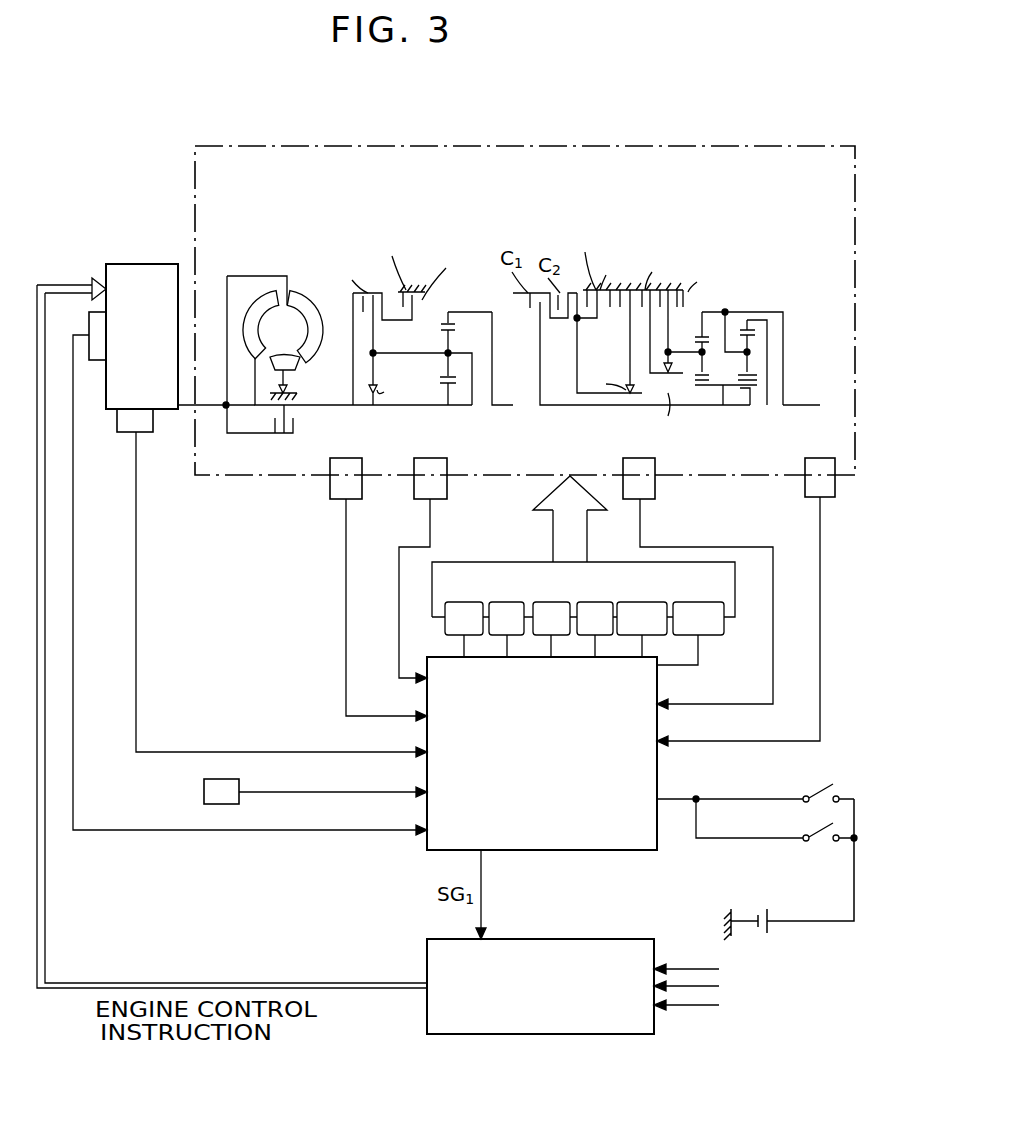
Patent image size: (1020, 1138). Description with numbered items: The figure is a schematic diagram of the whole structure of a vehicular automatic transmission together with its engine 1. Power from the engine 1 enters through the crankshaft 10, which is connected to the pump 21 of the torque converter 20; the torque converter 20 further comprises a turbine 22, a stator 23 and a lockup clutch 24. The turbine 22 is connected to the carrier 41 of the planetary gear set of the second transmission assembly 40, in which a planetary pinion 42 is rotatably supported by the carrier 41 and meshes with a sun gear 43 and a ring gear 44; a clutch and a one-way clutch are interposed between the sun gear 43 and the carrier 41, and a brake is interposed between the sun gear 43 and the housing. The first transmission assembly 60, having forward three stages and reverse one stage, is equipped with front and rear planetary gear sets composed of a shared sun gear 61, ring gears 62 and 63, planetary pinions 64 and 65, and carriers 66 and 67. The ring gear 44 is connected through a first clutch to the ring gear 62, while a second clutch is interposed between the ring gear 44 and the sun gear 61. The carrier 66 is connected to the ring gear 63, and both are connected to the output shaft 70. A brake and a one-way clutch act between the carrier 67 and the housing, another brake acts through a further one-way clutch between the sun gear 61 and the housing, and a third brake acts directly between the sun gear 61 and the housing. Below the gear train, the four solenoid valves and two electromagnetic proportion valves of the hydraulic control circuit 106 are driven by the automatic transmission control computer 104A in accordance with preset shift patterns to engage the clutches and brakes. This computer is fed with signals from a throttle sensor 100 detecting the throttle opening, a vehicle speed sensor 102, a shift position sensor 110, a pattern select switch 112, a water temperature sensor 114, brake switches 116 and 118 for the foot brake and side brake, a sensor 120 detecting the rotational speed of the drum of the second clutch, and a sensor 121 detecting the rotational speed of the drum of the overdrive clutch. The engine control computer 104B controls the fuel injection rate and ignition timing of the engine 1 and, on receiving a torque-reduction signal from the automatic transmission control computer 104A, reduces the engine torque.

The engine 1 is at (143, 278).
The crankshaft 10 is at (238, 408).
The torque converter 20 is at (349, 331).
The pump 21 is at (298, 306).
The turbine 22 is at (262, 308).
The stator 23 is at (300, 363).
The lockup clutch 24 is at (262, 434).
The second transmission assembly 40 is at (427, 311).
The carrier 41 is at (466, 333).
The planetary pinion 42 is at (440, 344).
The sun gear 43 is at (442, 386).
The ring gear 44 is at (448, 320).
The first transmission assembly 60 is at (700, 309).
The sun gear 61 is at (755, 392).
The ring gear 62 is at (758, 322).
The ring gear 63 is at (727, 312).
The planetary pinion 64 is at (760, 337).
The planetary pinion 65 is at (712, 385).
The carrier 66 is at (758, 376).
The carrier 67 is at (681, 352).
The output shaft 70 is at (792, 408).
The throttle sensor 100 is at (125, 433).
The vehicle speed sensor 102 is at (805, 482).
The automatic transmission control computer 104A is at (562, 840).
The engine control computer 104B is at (536, 1026).
The hydraulic control circuit 106 is at (735, 617).
The shift position sensor 110 is at (358, 487).
The pattern select switch 112 is at (204, 793).
The water temperature sensor 114 is at (96, 363).
The brake switch 116 is at (755, 780).
The brake switch 118 is at (776, 838).
The C2 sensor 120 is at (440, 487).
The C0 sensor 121 is at (650, 487).